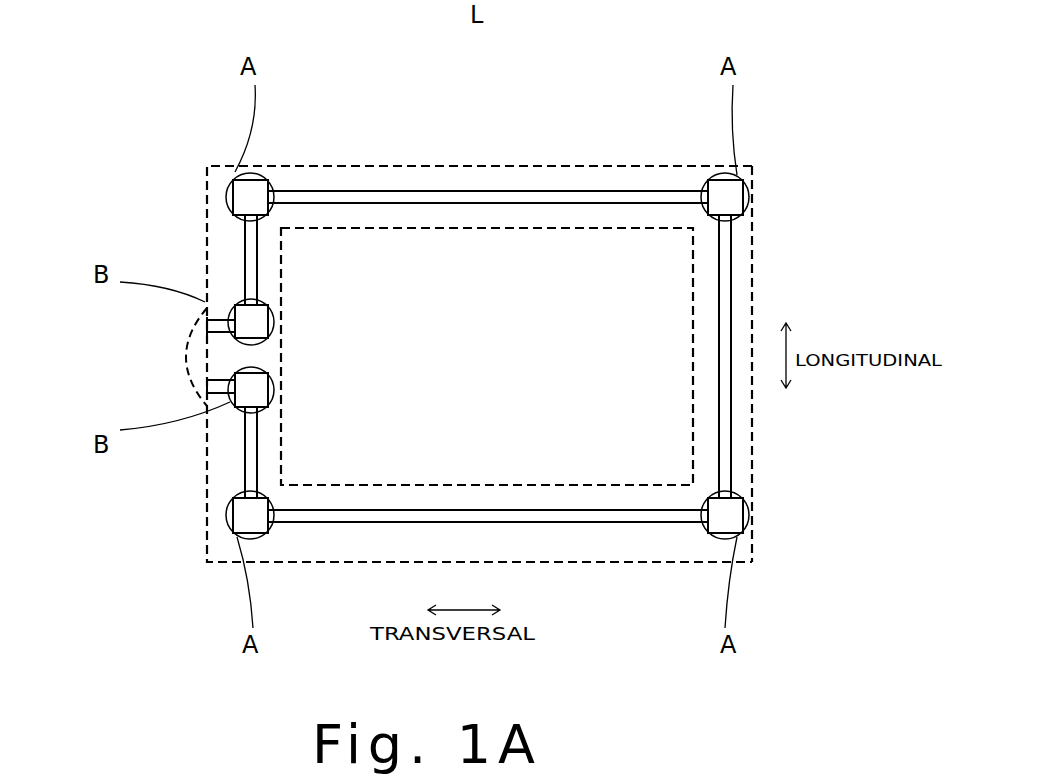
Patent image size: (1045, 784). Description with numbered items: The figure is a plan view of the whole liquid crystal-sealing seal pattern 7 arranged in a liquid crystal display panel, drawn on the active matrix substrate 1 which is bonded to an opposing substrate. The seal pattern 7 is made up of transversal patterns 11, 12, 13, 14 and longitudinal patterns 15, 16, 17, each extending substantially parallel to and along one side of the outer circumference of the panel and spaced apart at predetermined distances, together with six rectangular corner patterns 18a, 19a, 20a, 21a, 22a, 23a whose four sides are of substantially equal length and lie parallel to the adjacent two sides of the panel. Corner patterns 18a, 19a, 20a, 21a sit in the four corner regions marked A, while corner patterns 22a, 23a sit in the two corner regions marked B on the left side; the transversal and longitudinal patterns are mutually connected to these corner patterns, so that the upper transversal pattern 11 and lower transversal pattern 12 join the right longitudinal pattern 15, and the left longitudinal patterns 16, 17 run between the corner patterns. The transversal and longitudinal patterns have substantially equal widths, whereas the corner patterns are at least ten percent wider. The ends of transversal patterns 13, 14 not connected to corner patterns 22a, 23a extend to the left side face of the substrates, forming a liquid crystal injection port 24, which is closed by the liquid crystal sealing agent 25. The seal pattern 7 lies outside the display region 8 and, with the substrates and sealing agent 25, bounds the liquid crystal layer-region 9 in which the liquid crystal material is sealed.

The active matrix substrate 1 is at (825, 364).
The liquid crystal-sealing seal pattern 7 is at (394, 170).
The display region 8 is at (569, 269).
The liquid crystal layer-region 9 is at (609, 222).
The transversal pattern 11 is at (536, 197).
The transversal pattern 12 is at (571, 522).
The transversal pattern 13 is at (203, 307).
The transversal pattern 14 is at (203, 402).
The longitudinal pattern 15 is at (725, 242).
The longitudinal pattern 16 is at (250, 257).
The longitudinal pattern 17 is at (250, 460).
The corner pattern 18a is at (732, 192).
The corner pattern 19a is at (735, 527).
The corner pattern 20a is at (238, 188).
The corner pattern 21a is at (240, 520).
The corner pattern 22a is at (237, 300).
The corner pattern 23a is at (240, 402).
The liquid crystal injection port 24 is at (121, 357).
The liquid crystal sealing agent 25 is at (182, 362).